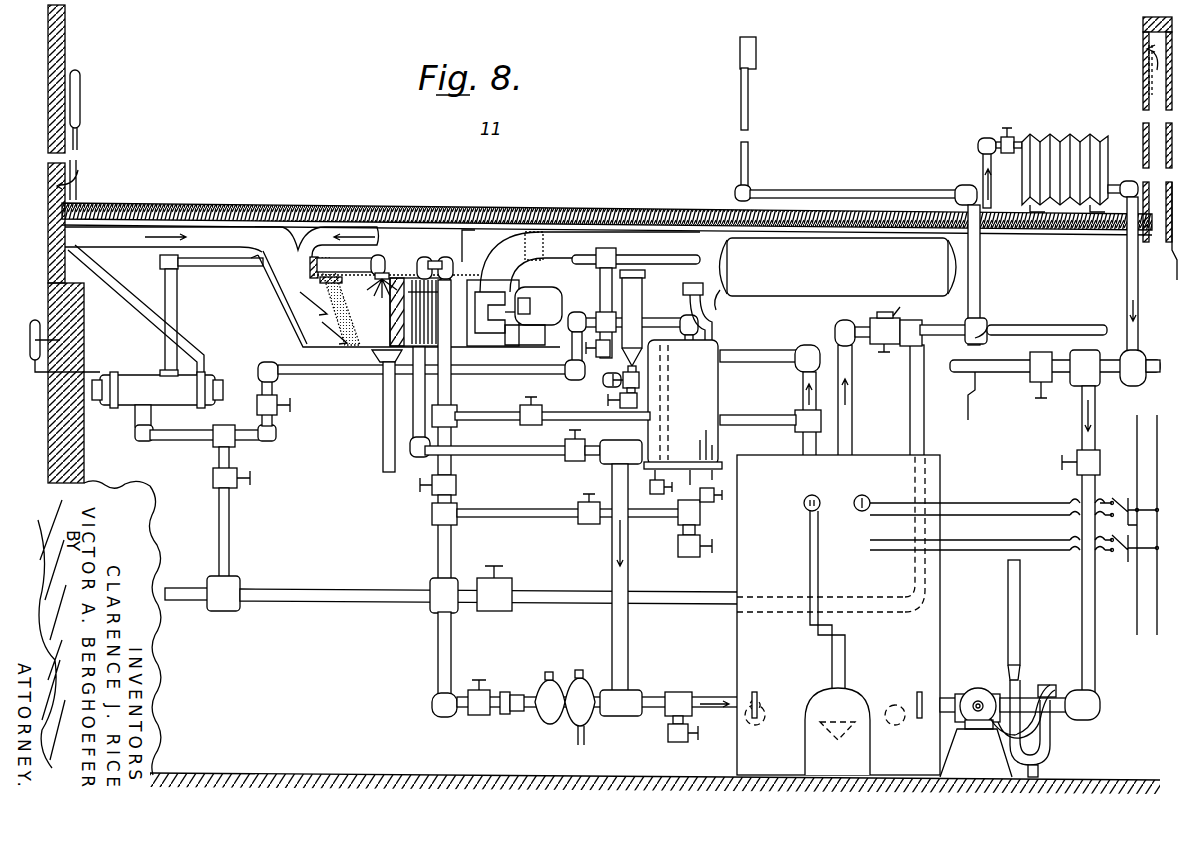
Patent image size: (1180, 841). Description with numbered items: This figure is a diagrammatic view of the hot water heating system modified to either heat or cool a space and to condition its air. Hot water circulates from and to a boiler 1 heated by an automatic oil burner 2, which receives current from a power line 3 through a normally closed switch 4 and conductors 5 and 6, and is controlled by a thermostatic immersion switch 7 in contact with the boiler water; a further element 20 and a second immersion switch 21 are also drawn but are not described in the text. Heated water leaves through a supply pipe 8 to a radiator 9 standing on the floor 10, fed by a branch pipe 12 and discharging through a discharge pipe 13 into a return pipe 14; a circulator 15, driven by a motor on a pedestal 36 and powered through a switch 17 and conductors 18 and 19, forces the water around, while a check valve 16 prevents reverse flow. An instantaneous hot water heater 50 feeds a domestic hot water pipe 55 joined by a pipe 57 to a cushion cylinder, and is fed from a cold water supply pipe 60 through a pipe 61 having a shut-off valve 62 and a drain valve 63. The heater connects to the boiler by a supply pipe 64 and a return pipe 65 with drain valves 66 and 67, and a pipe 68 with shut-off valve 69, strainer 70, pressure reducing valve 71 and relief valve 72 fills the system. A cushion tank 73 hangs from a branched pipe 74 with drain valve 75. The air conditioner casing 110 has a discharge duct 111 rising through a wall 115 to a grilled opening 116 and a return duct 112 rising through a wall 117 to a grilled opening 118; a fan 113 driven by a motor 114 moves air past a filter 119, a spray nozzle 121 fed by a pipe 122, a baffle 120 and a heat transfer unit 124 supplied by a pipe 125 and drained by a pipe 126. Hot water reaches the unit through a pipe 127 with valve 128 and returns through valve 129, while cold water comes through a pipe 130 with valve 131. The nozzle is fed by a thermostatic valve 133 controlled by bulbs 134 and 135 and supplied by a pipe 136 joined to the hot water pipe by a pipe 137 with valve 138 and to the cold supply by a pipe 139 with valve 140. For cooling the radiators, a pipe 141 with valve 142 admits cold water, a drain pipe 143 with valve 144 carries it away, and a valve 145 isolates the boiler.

The boiler 1 is at (752, 628).
The automatic oil burner 2 is at (812, 742).
The power line 3 is at (1148, 640).
The manually operated switch 4 is at (1112, 562).
The conductor 5 is at (846, 650).
The conductor 6 is at (828, 655).
The thermostatic immersion switch 7 is at (802, 505).
The supply pipe 8 is at (853, 393).
The radiator 9 is at (1048, 135).
The floor 10 is at (580, 206).
The branch pipe 12 is at (982, 265).
The discharge pipe 13 is at (1126, 266).
The return pipe 14 is at (1152, 372).
The impeller or circulator 15 is at (982, 688).
The check valve 16 is at (885, 329).
The manually operated switch 17 is at (1120, 490).
The conductor 18 is at (1006, 570).
The conductor 19 is at (1022, 570).
The thermostat 20 is at (756, 50).
The immersion switch 21 is at (852, 508).
The pedestal 36 is at (976, 748).
The instantaneous hot water heater 50 is at (683, 412).
The hot water pipe 55 is at (600, 292).
The pipe 57 is at (606, 378).
The cold water supply pipe 60 is at (197, 580).
The pipe 61 is at (493, 518).
The shut-off valve 62 is at (590, 518).
The drain valve 63 is at (676, 548).
The supply pipe 64 is at (778, 348).
The return pipe 65 is at (628, 638).
The drain valve 66 is at (705, 503).
The drain valve 67 is at (672, 732).
The pipe 68 is at (437, 660).
The shut-off valve 69 is at (475, 718).
The strainer 70 is at (512, 690).
The pressure reducing valve 71 is at (545, 715).
The relief valve 72 is at (578, 690).
The expansion or cushion tank 73 is at (838, 267).
The branched pipe 74 is at (707, 322).
The drain valve 75 is at (654, 492).
The casing 110 is at (272, 312).
The discharge duct 111 is at (821, 207).
The return duct 112 is at (222, 241).
The fan 113 is at (460, 352).
The electric motor 114 is at (540, 345).
The wall 115 is at (1142, 97).
The grilled opening 116 is at (1142, 65).
The wall 117 is at (62, 44).
The grilled opening 118 is at (80, 190).
The filter 119 is at (360, 365).
The baffle 120 is at (392, 330).
The spray nozzle 121 is at (357, 279).
The pipe 122 is at (177, 296).
The heat transfer unit 124 is at (405, 315).
The pipe 125 is at (452, 392).
The pipe 126 is at (505, 460).
The pipe 127 is at (502, 424).
The shut off valve 128 is at (548, 406).
The shut off valve 129 is at (570, 454).
The pipe 130 is at (452, 462).
The shut off valve 131 is at (456, 487).
The thermostatic valve 133 is at (157, 389).
The bulb 134 is at (78, 90).
The bulb 135 is at (42, 330).
The pipe 136 is at (195, 445).
The pipe 137 is at (263, 370).
The shut off valve 138 is at (272, 412).
The pipe 139 is at (229, 523).
The shut off valve 140 is at (210, 482).
The pipe 141 is at (318, 600).
The shut off valve 142 is at (492, 605).
The drain pipe 143 is at (1020, 372).
The shut off valve 144 is at (1038, 400).
The shut off valve 145 is at (1060, 460).